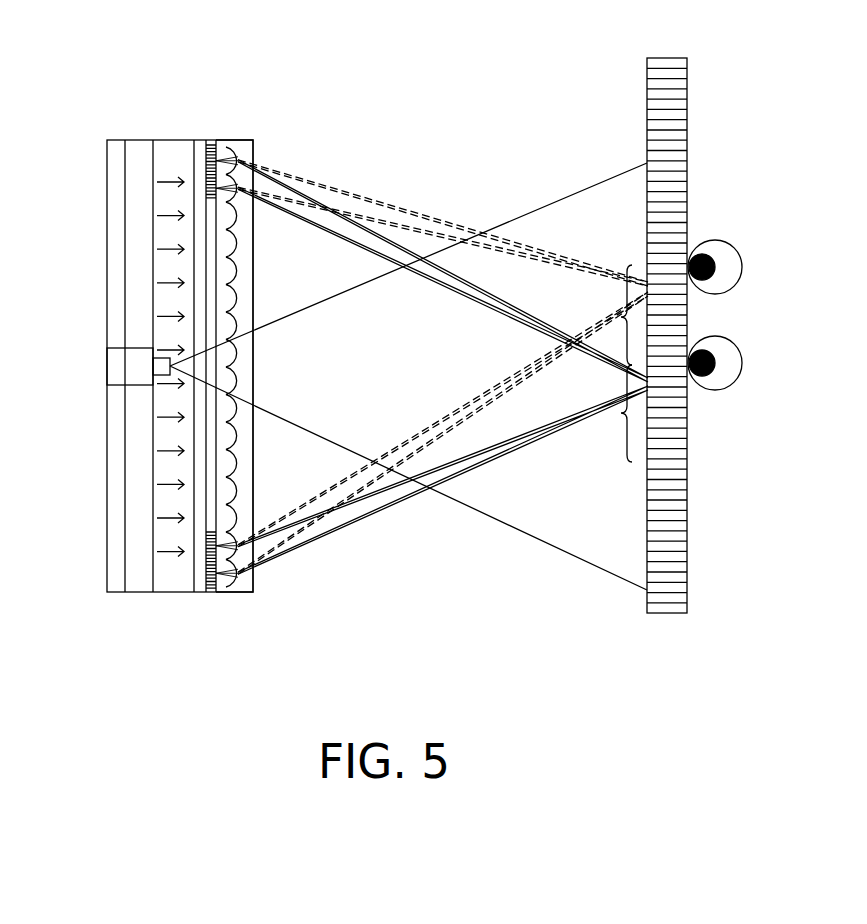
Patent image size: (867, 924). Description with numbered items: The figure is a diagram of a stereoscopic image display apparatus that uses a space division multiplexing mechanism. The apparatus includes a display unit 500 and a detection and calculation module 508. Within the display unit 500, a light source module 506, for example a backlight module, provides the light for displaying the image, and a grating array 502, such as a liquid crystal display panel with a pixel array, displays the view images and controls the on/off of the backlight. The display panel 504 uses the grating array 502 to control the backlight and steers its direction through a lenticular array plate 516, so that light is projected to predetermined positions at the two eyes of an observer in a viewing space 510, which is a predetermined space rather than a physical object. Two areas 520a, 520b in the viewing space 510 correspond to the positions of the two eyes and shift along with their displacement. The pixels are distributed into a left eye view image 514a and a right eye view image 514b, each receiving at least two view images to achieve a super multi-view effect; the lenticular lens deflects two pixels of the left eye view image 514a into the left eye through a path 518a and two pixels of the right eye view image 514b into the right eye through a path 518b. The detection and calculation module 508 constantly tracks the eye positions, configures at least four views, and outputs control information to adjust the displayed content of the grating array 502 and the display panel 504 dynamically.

The display unit 500 is at (116, 137).
The grating array 502 is at (212, 590).
The display panel 504 is at (242, 583).
The light source module 506 is at (139, 580).
The detection and calculation module 508 is at (128, 370).
The viewing space 510 is at (668, 57).
The left eye view image 514a is at (207, 152).
The right eye view image 514b is at (205, 160).
The lenticular array plate 516 is at (238, 153).
The path 518a is at (326, 190).
The path 518b is at (388, 205).
The area 520a is at (625, 312).
The area 520b is at (627, 413).